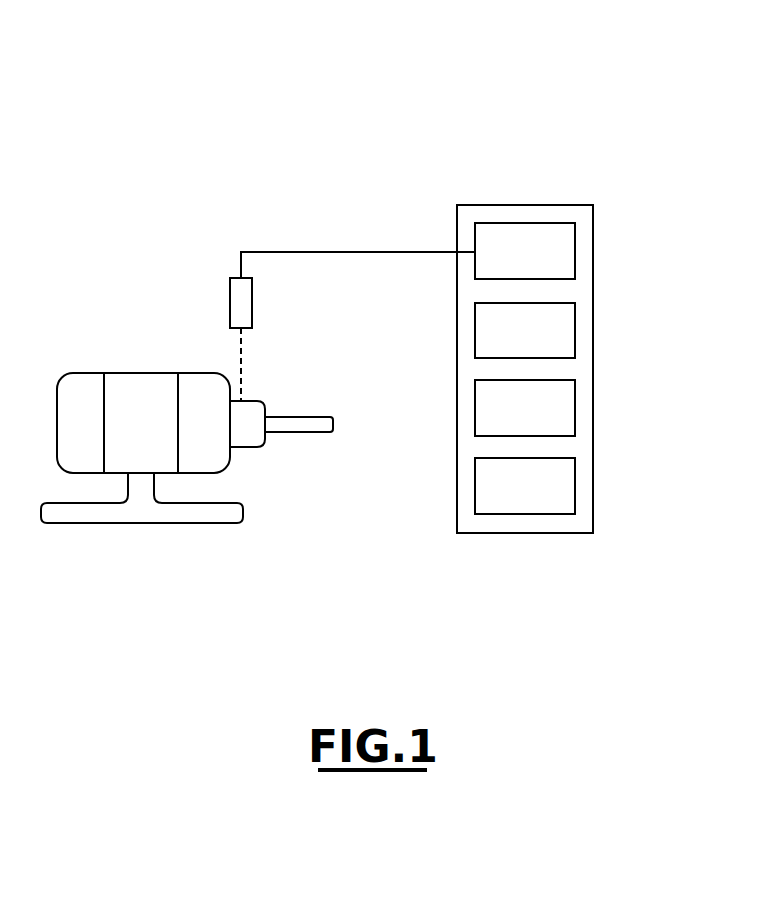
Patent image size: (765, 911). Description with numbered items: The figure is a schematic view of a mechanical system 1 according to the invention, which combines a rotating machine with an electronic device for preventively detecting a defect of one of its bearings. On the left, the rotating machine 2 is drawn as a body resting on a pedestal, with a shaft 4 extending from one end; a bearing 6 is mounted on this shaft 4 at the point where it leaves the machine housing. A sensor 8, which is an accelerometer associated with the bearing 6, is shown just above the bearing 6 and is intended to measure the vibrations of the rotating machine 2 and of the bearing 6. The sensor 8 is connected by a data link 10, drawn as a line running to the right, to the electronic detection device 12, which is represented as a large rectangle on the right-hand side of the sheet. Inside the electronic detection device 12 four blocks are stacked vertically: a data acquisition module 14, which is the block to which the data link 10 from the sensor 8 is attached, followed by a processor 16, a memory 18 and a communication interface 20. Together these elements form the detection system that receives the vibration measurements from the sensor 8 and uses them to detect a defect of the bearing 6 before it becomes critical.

The mechanical system 1 is at (190, 118).
The rotating machine 2 is at (88, 385).
The shaft 4 is at (307, 422).
The bearing 6 is at (257, 408).
The sensor 8 is at (230, 308).
The data link 10 is at (388, 251).
The electronic detection device 12 is at (569, 205).
The data acquisition module 14 is at (575, 255).
The processor 16 is at (575, 335).
The memory 18 is at (575, 408).
The communication interface 20 is at (575, 487).